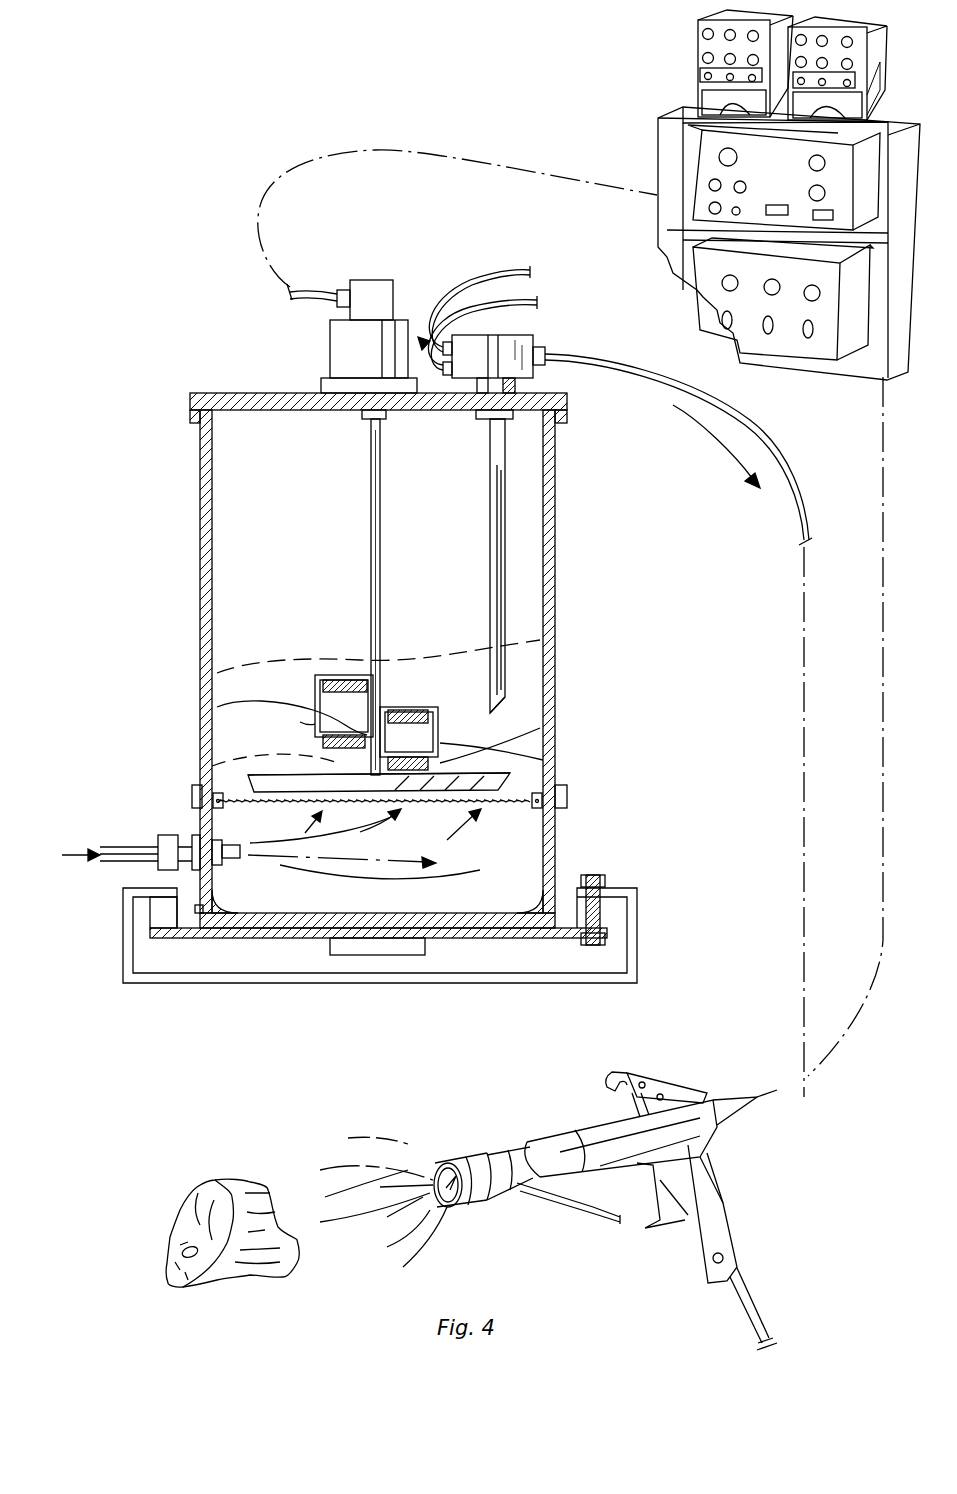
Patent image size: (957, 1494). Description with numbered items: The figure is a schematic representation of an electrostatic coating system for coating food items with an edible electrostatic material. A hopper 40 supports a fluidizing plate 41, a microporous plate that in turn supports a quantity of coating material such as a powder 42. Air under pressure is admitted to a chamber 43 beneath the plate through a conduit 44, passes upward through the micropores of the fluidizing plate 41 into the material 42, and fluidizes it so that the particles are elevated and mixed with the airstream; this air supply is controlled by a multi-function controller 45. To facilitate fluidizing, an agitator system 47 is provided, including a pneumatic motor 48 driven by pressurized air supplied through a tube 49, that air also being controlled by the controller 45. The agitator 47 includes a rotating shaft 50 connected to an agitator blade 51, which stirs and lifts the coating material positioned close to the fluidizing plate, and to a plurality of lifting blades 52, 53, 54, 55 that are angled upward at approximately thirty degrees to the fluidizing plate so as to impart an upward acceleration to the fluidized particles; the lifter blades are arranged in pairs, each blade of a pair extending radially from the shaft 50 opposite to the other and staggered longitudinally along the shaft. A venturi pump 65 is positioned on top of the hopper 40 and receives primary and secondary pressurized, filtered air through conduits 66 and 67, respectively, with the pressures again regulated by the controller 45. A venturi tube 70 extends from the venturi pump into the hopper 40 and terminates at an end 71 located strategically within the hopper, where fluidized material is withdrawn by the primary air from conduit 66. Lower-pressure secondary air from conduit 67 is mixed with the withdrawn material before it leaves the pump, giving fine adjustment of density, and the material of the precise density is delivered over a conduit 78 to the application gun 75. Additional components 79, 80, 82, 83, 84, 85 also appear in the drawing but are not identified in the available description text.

The hopper 40 is at (555, 565).
The fluidizing plate 41 is at (520, 805).
The powder 42 is at (533, 773).
The chamber 43 is at (502, 867).
The conduit 44 is at (133, 838).
The multi-function controller 45 is at (663, 138).
The agitator system 47 is at (320, 355).
The pneumatic motor 48 is at (363, 330).
The tube 49 is at (300, 292).
The rotating shaft 50 is at (380, 572).
The agitator blade 51 is at (262, 775).
The lifting blade 52 is at (333, 675).
The lifting blade 53 is at (410, 707).
The lifting blade 54 is at (300, 722).
The lifting blade 55 is at (540, 728).
The venturi pump 65 is at (523, 340).
The conduit 66 is at (527, 295).
The conduit 67 is at (498, 272).
The venturi tube 70 is at (500, 516).
The end of venturi tube 71 is at (500, 710).
The spray gun 75 is at (705, 1095).
The conduit 78 is at (780, 462).
The cable 79 is at (882, 690).
The meat product 80 is at (250, 1180).
The frame 82 is at (635, 930).
The plate 83 is at (495, 938).
The mount 84 is at (592, 907).
The load cell block 85 is at (352, 950).